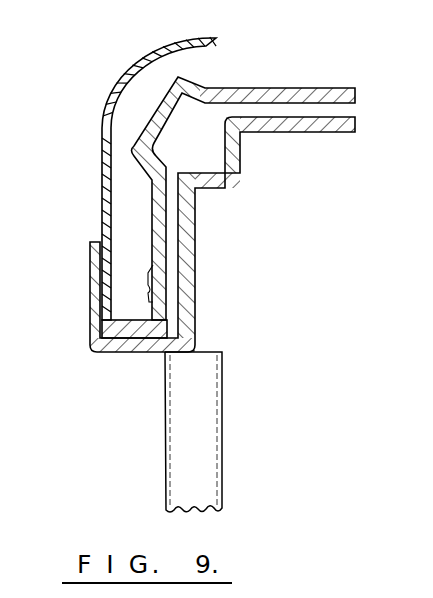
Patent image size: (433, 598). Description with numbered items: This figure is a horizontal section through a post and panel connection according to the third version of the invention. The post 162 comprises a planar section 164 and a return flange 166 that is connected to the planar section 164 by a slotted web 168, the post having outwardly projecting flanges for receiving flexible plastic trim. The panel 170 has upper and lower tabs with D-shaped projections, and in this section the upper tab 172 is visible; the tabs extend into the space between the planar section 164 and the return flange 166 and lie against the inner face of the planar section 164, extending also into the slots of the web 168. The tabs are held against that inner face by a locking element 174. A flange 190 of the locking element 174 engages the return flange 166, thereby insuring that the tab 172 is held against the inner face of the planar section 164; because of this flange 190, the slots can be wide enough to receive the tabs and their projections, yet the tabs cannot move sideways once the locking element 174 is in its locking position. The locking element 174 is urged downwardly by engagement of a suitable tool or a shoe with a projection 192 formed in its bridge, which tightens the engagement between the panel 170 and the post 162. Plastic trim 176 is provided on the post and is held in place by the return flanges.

The post 162 is at (190, 254).
The planar section 164 is at (196, 279).
The return flange 166 is at (97, 273).
The slotted web 168 is at (128, 349).
The panel 170 is at (175, 474).
The upper tab 172 is at (196, 223).
The locking element 174 is at (244, 173).
The plastic trim 176 is at (102, 128).
The flange of the locking element 190 is at (100, 352).
The projection 192 is at (157, 127).